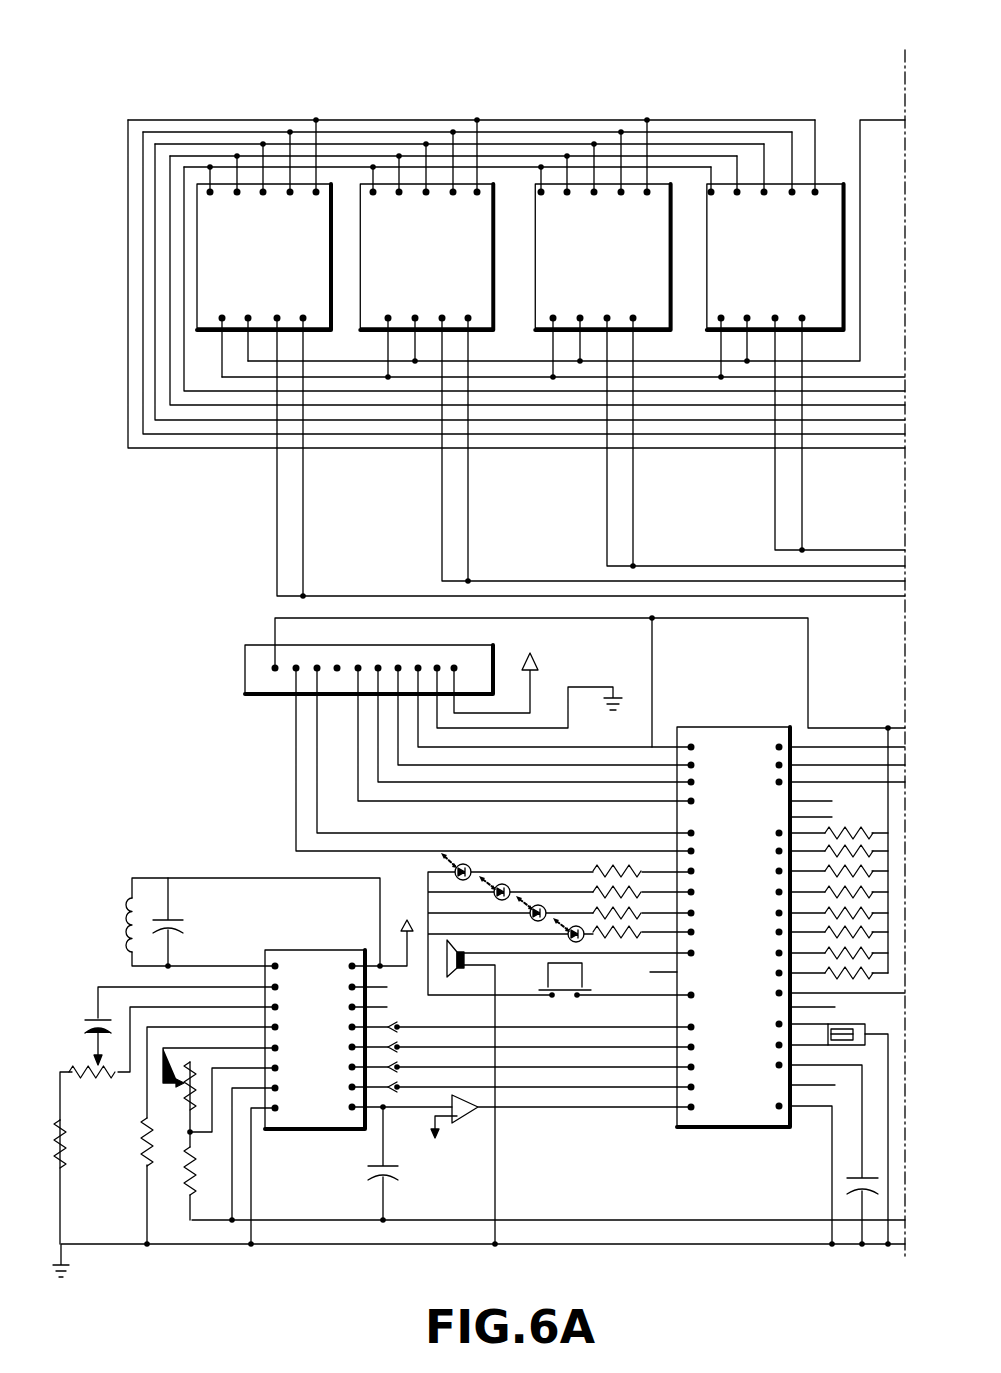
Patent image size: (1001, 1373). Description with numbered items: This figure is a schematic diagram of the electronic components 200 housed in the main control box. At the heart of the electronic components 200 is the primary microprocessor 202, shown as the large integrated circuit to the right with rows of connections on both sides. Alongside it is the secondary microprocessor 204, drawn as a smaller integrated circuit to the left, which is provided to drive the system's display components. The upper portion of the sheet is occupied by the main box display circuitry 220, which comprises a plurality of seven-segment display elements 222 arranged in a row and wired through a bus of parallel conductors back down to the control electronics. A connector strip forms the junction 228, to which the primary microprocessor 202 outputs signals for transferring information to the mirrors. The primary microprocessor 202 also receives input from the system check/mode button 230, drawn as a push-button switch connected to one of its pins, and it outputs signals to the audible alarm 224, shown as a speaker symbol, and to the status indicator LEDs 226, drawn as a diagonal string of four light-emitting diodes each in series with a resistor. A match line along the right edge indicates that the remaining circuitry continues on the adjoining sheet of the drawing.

The electronic components 200 is at (158, 52).
The main box display circuitry 220 is at (181, 609).
The seven-segment display elements 222 is at (225, 190).
The junction 228 is at (247, 695).
The primary microprocessor 202 is at (747, 1118).
The secondary microprocessor 204 is at (303, 952).
The audible alarm 224 is at (452, 977).
The status indicator LEDs 226 is at (483, 903).
The system check/mode button 230 is at (560, 983).